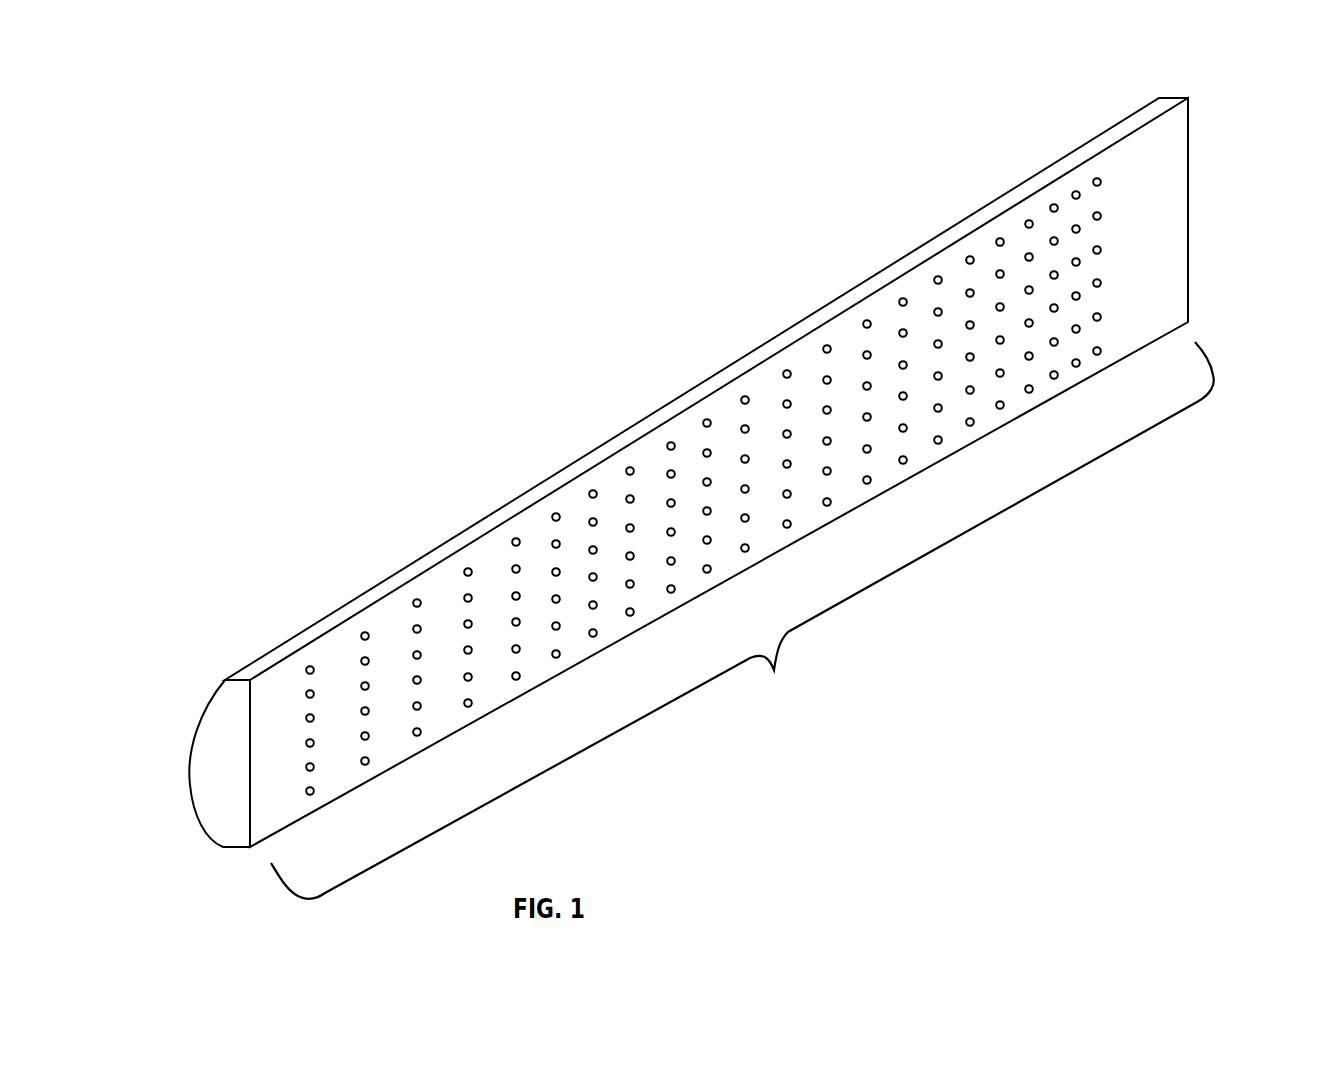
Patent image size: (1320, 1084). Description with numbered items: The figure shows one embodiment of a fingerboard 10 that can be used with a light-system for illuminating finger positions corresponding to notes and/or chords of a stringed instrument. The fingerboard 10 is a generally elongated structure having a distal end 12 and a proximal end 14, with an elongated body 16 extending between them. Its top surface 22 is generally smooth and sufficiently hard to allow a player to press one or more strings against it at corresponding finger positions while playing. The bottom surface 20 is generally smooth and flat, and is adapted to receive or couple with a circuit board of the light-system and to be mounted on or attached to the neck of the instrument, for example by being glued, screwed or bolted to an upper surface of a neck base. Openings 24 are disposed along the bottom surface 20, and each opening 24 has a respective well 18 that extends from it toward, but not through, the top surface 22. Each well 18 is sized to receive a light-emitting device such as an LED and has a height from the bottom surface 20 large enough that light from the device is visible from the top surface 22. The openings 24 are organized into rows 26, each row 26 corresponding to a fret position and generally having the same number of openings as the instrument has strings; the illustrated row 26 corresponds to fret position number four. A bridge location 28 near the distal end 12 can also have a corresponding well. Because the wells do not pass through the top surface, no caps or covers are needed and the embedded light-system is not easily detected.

The fingerboard 10 is at (678, 353).
The distal end 12 is at (1188, 232).
The proximal end 14 is at (222, 765).
The elongated body 16 is at (742, 620).
The well 18 is at (593, 493).
The bottom surface 20 is at (1140, 168).
The top surface 22 is at (185, 760).
The openings 24 is at (585, 492).
The row 26 is at (458, 718).
The bridge location 28 is at (1155, 87).